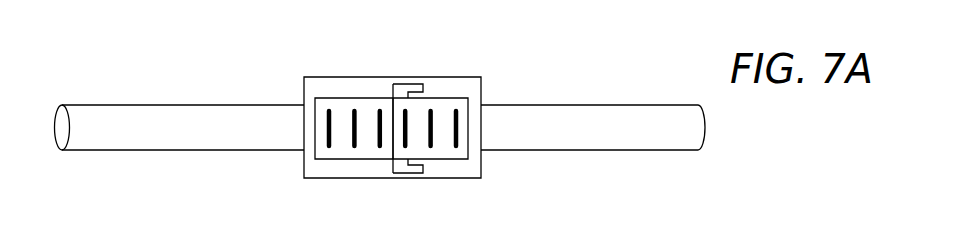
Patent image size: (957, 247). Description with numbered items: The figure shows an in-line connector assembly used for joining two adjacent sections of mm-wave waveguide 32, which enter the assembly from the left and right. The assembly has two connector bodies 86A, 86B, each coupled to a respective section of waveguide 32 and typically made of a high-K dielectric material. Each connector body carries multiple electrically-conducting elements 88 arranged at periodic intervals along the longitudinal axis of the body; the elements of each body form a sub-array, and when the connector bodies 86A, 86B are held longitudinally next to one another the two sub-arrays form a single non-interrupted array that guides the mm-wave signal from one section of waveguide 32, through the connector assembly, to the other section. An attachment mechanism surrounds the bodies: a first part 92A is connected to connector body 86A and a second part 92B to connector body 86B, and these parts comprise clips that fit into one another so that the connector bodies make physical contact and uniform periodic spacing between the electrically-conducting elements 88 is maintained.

The mm-wave waveguide 32 is at (187, 105).
The electrically-conducting elements 88 is at (380, 110).
The first part 92A is at (304, 166).
The second part 92B is at (482, 167).
The connector body 86A is at (347, 160).
The connector body 86B is at (450, 160).